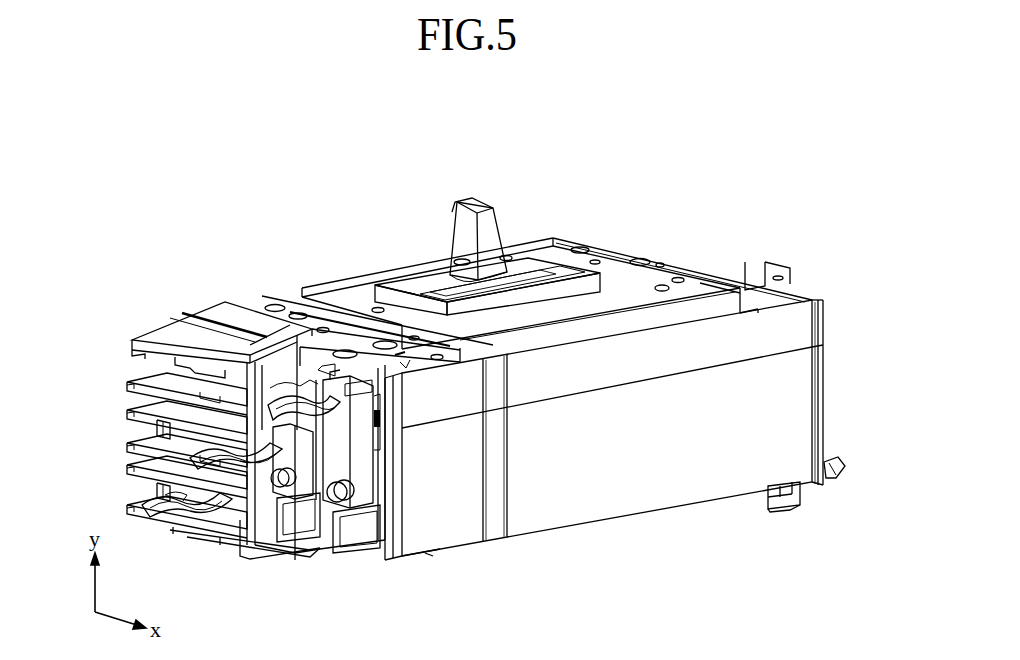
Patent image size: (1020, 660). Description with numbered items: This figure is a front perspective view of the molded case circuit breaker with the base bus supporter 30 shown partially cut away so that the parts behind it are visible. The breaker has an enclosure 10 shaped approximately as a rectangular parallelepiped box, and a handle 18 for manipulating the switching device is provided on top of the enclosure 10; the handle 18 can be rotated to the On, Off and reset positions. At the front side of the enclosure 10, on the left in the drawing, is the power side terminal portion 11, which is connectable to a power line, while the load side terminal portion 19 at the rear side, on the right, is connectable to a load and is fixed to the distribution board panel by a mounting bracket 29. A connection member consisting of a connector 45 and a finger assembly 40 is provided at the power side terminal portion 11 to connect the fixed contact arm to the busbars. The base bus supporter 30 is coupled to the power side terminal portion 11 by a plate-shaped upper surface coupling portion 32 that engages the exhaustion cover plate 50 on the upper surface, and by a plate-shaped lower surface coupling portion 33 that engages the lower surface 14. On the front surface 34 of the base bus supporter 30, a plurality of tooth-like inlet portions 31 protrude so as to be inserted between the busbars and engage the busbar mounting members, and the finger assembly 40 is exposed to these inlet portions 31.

The enclosure 10 is at (630, 290).
The power side terminal portion 11 is at (457, 523).
The lower surface 14 is at (430, 555).
The handle 18 is at (500, 223).
The load side terminal portion 19 is at (808, 380).
The mounting bracket 29 is at (842, 465).
The base bus supporter 30 is at (210, 309).
The inlet portion 31 is at (118, 340).
The upper surface coupling portion 32 is at (283, 342).
The lower surface coupling portion 33 is at (310, 540).
The front surface 34 is at (230, 508).
The finger assembly 40 is at (252, 470).
The connector 45 is at (290, 490).
The exhaustion cover plate 50 is at (373, 363).